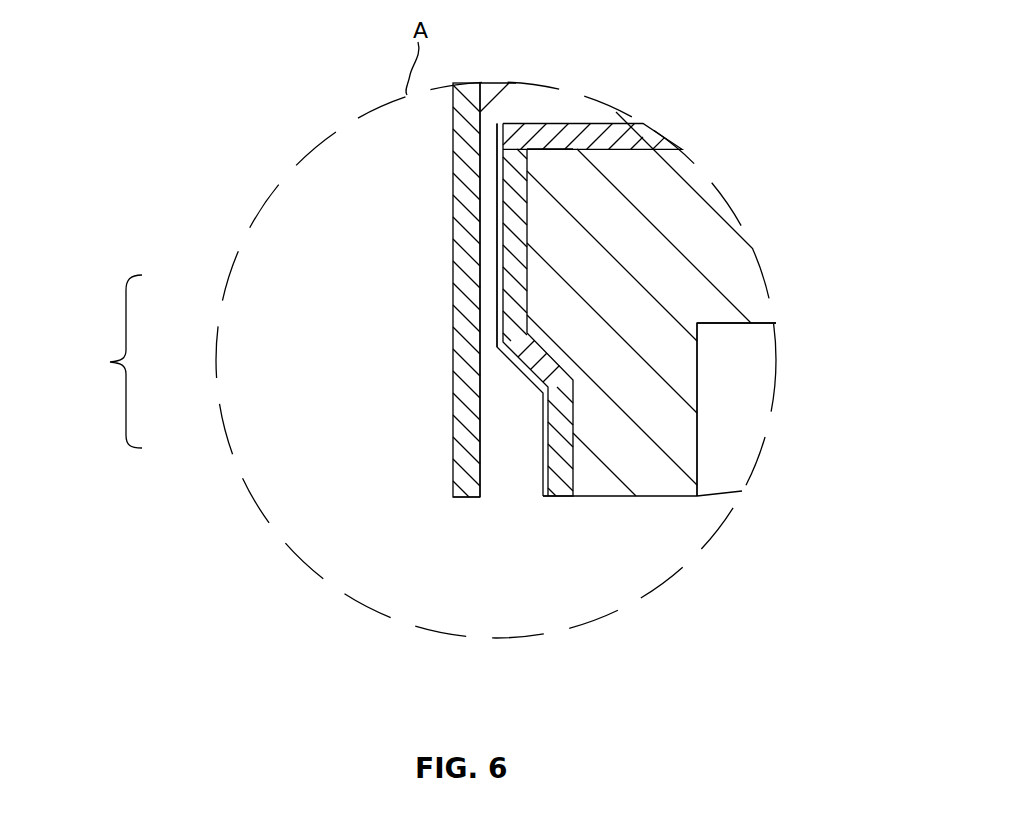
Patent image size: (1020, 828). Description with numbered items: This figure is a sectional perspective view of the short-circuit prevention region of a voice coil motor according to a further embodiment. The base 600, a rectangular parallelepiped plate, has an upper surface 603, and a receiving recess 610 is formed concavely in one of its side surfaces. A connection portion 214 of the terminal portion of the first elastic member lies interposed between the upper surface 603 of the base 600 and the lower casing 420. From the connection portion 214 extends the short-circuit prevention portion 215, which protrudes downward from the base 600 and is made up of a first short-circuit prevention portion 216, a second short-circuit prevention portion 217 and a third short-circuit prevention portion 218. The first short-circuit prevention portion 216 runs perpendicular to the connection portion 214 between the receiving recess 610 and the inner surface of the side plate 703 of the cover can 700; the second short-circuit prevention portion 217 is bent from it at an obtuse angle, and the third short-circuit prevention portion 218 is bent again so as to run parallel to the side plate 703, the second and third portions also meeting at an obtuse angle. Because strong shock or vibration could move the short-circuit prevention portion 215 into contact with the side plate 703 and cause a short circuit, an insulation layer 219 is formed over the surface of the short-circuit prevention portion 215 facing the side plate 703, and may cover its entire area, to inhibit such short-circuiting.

The connection portion 214 is at (627, 132).
The short-circuit prevention portion 215 is at (107, 361).
The first short-circuit prevention portion 216 is at (510, 272).
The second short-circuit prevention portion 217 is at (519, 361).
The third short-circuit prevention portion 218 is at (550, 455).
The insulation layer 219 is at (556, 487).
The lower casing 420 is at (576, 104).
The base 600 is at (708, 226).
The upper surface 603 is at (633, 149).
The receiving recess 610 is at (565, 372).
The cover can 700 is at (467, 497).
The side plate 703 is at (500, 455).